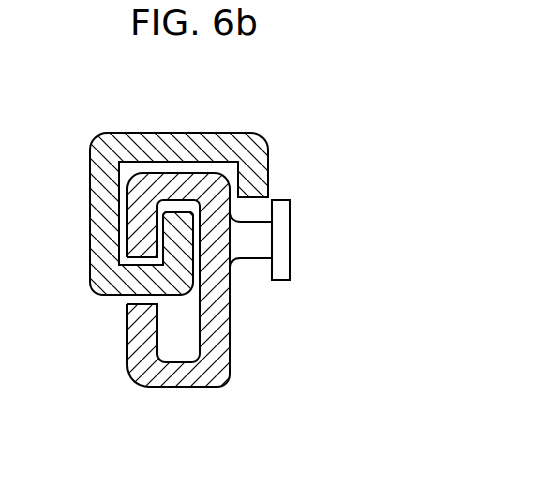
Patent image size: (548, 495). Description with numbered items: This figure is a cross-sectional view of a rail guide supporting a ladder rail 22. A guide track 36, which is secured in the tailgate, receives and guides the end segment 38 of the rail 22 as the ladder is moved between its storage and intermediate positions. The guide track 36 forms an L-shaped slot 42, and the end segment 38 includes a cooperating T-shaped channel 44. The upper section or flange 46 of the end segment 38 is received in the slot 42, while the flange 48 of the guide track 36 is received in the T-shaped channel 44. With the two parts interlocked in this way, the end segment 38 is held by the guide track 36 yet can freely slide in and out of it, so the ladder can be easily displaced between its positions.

The rail 22 is at (262, 242).
The guide track 36 is at (217, 143).
The end segment 38 is at (225, 380).
The L-shaped slot 42 is at (130, 170).
The T-shaped channel 44 is at (180, 315).
The flange 46 is at (165, 178).
The flange 48 is at (175, 240).